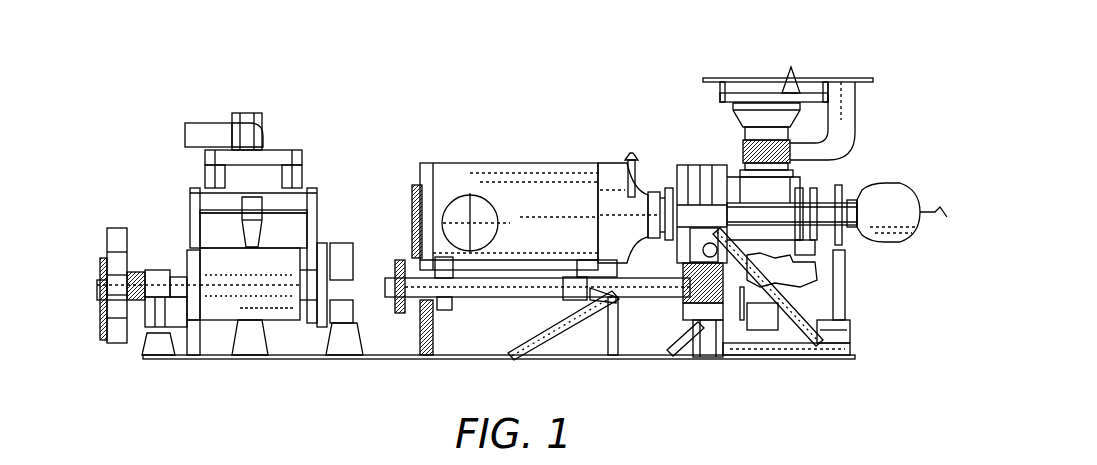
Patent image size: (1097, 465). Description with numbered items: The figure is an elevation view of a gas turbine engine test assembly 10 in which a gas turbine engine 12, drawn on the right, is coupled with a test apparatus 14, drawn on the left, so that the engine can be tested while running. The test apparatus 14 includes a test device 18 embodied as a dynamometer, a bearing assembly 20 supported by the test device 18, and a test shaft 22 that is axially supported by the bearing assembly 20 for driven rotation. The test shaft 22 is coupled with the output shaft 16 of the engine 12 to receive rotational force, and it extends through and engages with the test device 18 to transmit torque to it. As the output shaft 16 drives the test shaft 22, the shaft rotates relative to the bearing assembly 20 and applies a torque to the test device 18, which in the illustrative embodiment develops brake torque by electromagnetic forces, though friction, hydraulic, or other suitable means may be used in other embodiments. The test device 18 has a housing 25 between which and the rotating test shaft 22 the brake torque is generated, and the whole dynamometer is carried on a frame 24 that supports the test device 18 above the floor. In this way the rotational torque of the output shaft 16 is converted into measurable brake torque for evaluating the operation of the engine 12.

The gas turbine engine test assembly 10 is at (889, 67).
The gas turbine engine 12 is at (887, 136).
The test apparatus 14 is at (337, 116).
The output shaft 16 is at (634, 311).
The test device 18 is at (279, 234).
The bearing assembly 20 is at (127, 290).
The test shaft 22 is at (133, 266).
The frame 24 is at (130, 351).
The housing 25 is at (295, 269).